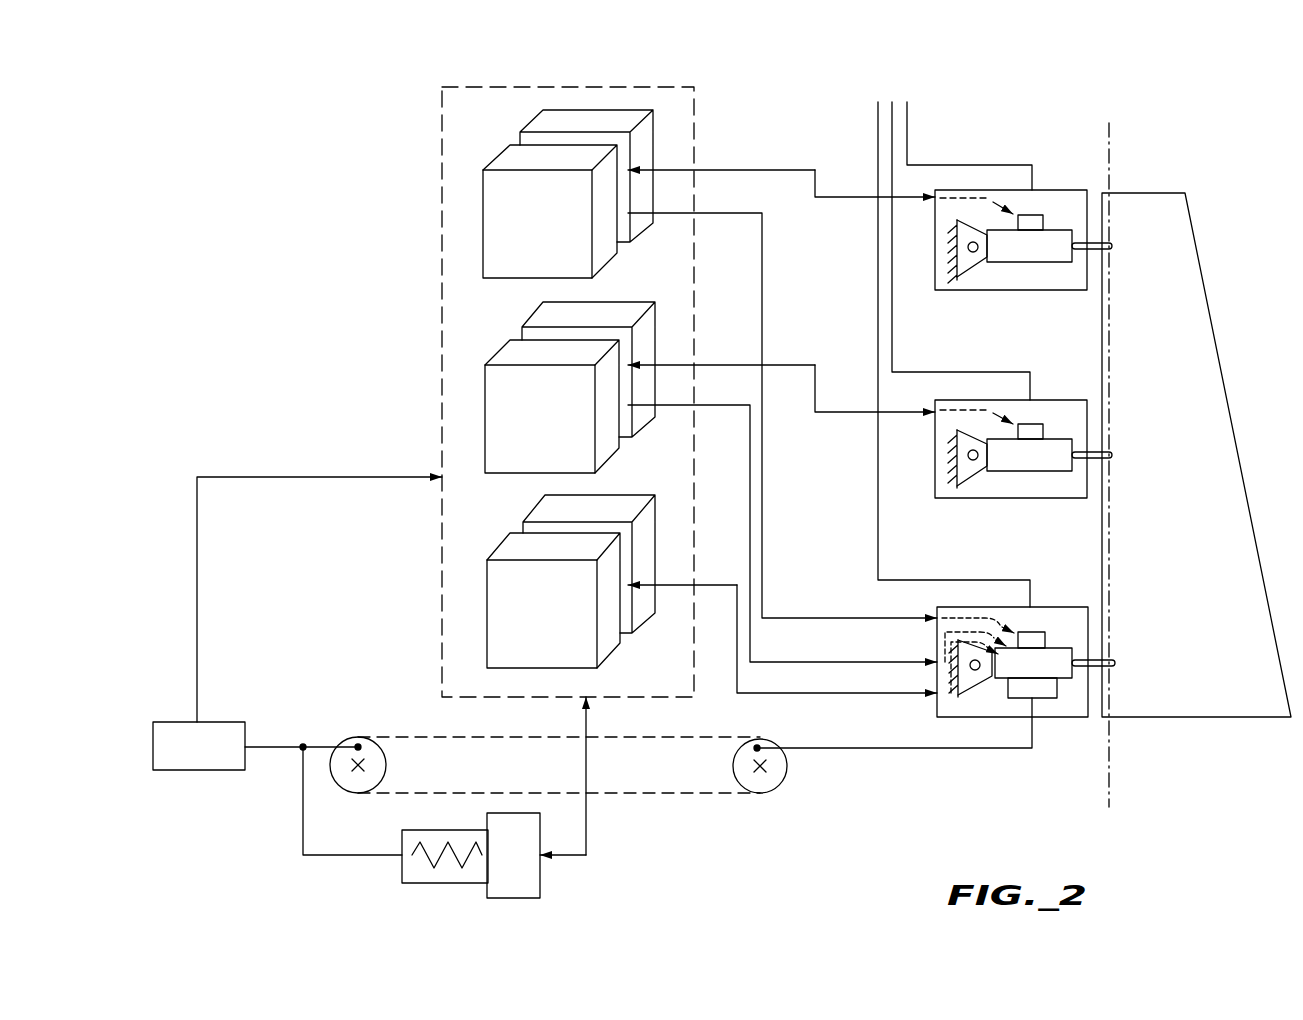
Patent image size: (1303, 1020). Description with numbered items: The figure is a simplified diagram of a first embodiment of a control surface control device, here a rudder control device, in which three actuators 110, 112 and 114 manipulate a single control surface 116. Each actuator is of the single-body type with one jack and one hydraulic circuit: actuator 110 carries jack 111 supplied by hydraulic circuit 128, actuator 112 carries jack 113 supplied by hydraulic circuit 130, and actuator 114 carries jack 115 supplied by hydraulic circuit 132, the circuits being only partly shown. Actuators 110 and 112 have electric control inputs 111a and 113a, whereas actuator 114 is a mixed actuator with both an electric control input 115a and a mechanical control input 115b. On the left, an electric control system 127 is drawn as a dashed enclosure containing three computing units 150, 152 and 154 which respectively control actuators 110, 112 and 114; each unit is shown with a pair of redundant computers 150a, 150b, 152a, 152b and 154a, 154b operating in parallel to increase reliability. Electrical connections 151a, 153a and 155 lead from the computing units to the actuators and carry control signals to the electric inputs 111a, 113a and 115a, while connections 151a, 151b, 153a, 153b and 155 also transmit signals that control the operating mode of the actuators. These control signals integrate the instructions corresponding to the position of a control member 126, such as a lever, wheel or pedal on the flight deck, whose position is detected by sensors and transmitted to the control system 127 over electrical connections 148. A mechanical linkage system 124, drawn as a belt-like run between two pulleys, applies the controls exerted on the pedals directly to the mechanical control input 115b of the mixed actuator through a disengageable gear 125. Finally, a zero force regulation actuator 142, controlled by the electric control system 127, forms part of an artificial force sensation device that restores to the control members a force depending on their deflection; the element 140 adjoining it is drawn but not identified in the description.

The actuator 110 is at (983, 290).
The jack 111 is at (1052, 252).
The electric control input 111a is at (1045, 220).
The actuator 112 is at (990, 498).
The jack 113 is at (1028, 458).
The electric control input 113a is at (1040, 428).
The mixed actuator 114 is at (990, 717).
The jack 115 is at (1060, 668).
The electric control input 115a is at (1040, 637).
The mechanical control input 115b is at (1045, 695).
The control surface 116 is at (1168, 250).
The mechanical linkage system 124 is at (718, 795).
The disengageable gear 125 is at (907, 748).
The control member 126 is at (170, 760).
The electric control system 127 is at (442, 263).
The hydraulic circuit 128 is at (908, 132).
The hydraulic circuit 130 is at (910, 110).
The hydraulic circuit 132 is at (877, 107).
The resistor 140 is at (413, 880).
The zero force regulation actuator 142 is at (540, 883).
The electrical connections 148 is at (280, 475).
The computing unit 150 is at (490, 180).
The computer 150a is at (495, 205).
The computer 150b is at (541, 118).
The electrical connection 151a is at (710, 168).
The electrical connection 151b is at (817, 267).
The computing unit 152 is at (492, 387).
The computer 152a is at (515, 408).
The computer 152b is at (538, 315).
The electrical connection 153a is at (835, 332).
The electrical connection 153b is at (748, 480).
The computing unit 154 is at (505, 581).
The computer 154a is at (540, 508).
The computer 154b is at (500, 540).
The electrical connection 155 is at (772, 693).